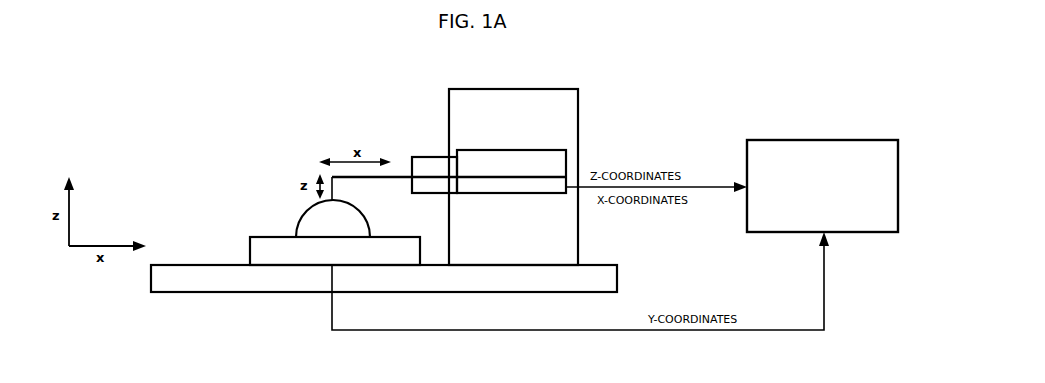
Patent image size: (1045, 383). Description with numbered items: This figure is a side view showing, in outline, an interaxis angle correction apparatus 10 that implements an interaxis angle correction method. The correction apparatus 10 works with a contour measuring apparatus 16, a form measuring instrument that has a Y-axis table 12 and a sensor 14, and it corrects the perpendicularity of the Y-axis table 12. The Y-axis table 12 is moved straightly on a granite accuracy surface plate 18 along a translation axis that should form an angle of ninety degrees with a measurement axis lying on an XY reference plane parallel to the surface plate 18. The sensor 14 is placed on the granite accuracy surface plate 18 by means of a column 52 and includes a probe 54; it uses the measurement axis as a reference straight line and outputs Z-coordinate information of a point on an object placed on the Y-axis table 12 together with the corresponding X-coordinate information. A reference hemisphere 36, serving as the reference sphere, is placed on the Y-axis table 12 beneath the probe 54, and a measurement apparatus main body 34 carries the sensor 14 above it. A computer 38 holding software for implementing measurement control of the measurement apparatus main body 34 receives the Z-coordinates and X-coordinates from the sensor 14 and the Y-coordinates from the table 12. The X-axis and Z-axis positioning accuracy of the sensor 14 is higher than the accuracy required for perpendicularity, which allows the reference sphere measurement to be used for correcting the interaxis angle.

The interaxis angle correction apparatus 10 is at (738, 148).
The Y-axis table 12 is at (262, 237).
The sensor 14 is at (513, 197).
The contour measuring apparatus 16 is at (323, 121).
The granite accuracy surface plate 18 is at (190, 265).
The measurement apparatus main body 34 is at (592, 96).
The reference hemisphere 36 is at (303, 216).
The computer 38 is at (780, 140).
The column 52 is at (563, 123).
The probe 54 is at (335, 188).